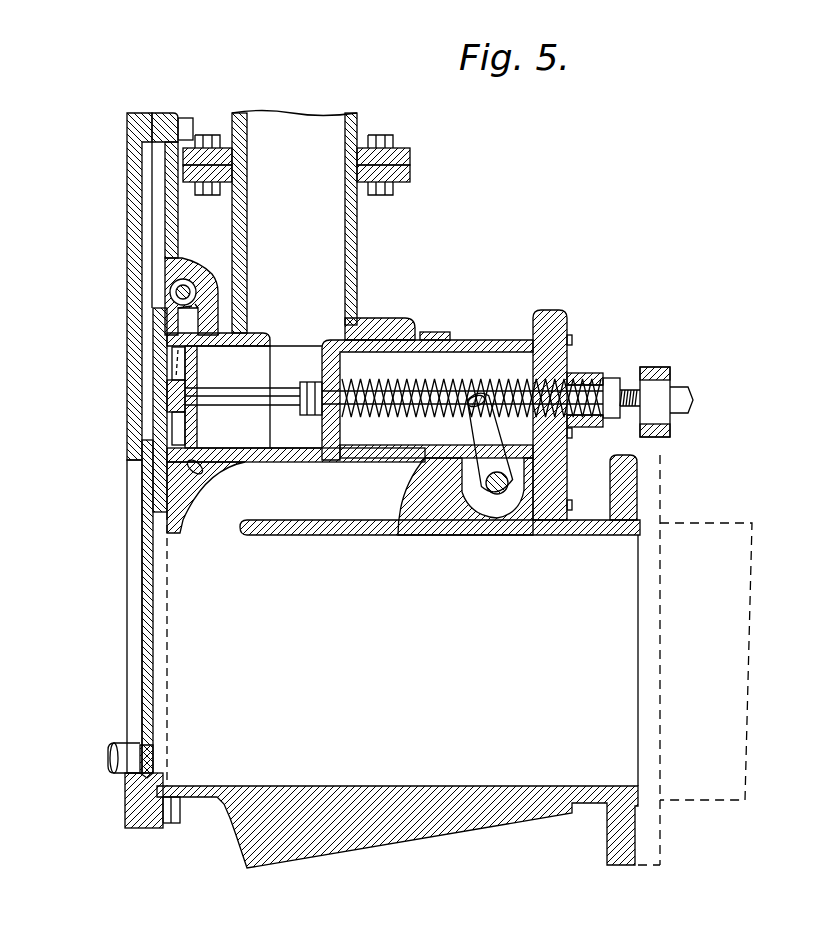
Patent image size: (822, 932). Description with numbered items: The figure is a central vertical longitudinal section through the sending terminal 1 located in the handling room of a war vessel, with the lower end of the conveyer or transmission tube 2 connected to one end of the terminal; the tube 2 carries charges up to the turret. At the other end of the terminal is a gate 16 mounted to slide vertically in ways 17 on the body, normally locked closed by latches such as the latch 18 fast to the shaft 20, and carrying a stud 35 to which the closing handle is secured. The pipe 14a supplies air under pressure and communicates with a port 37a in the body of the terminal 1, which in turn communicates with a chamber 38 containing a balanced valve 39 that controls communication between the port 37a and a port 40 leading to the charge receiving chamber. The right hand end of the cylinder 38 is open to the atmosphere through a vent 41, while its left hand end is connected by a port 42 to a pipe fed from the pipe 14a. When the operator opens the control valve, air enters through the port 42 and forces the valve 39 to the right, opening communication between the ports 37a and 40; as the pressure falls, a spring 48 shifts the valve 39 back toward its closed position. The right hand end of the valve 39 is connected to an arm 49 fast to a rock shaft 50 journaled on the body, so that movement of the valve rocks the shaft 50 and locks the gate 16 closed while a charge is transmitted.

The sending terminal 1 is at (533, 660).
The conveyer or transmission tube 2 is at (720, 518).
The pipe 14a is at (296, 222).
The gate 16 is at (140, 680).
The ways 17 is at (148, 405).
The latch 18 is at (168, 314).
The shaft 20 is at (176, 293).
The stud 35 is at (130, 757).
The port 37a is at (346, 285).
The chamber 38 is at (296, 397).
The balanced valve 39 is at (322, 362).
The port 40 is at (398, 658).
The vent 41 is at (507, 347).
The port 42 is at (197, 463).
The spring 48 is at (439, 394).
The arm 49 is at (480, 414).
The rock shaft 50 is at (514, 458).